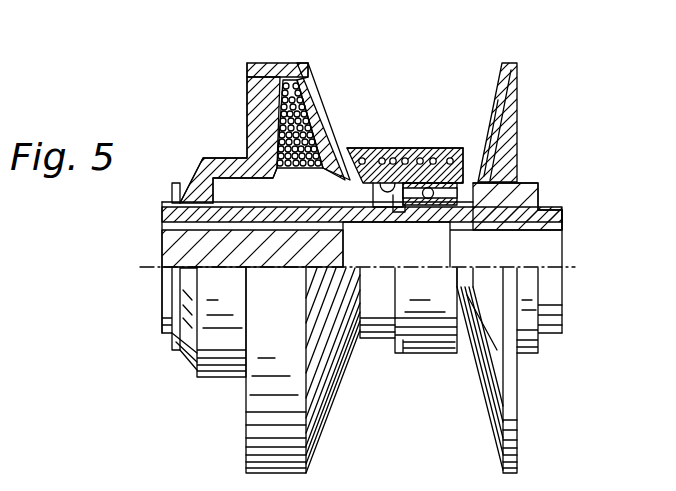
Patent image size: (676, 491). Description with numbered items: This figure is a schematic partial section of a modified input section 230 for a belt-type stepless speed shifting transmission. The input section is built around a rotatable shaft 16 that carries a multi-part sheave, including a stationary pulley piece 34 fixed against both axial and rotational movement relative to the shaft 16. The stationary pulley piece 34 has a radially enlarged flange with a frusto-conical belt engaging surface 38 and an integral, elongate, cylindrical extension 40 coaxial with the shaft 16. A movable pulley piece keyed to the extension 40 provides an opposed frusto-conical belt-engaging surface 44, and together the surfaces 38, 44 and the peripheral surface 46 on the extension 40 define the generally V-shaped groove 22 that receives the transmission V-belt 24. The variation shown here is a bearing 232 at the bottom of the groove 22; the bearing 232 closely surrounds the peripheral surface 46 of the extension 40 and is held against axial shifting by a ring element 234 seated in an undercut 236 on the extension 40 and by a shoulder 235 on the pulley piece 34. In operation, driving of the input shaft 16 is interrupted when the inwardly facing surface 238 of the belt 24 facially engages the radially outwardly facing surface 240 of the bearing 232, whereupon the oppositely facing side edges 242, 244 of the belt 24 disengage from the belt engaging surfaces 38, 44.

The V-shaped groove 22 is at (396, 47).
The shaft 16 is at (198, 246).
The cylindrical extension 40 is at (190, 214).
The side edge 244 is at (350, 166).
The peripheral surface 46 is at (355, 176).
The transmission V-belt 24 is at (396, 148).
The inwardly facing surface 238 is at (420, 152).
The radially outwardly facing surface 240 is at (428, 158).
The bearing 232 is at (432, 176).
The modified input section 230 is at (557, 106).
The stationary sheave/pulley piece 34 is at (510, 70).
The side edge 242 is at (488, 165).
The shoulder 235 is at (455, 213).
The undercut 236 is at (425, 200).
The ring element 234 is at (375, 205).
The frusto-conical belt-engaging surface 44 is at (325, 432).
The frusto-conical belt engaging surface 38 is at (490, 432).